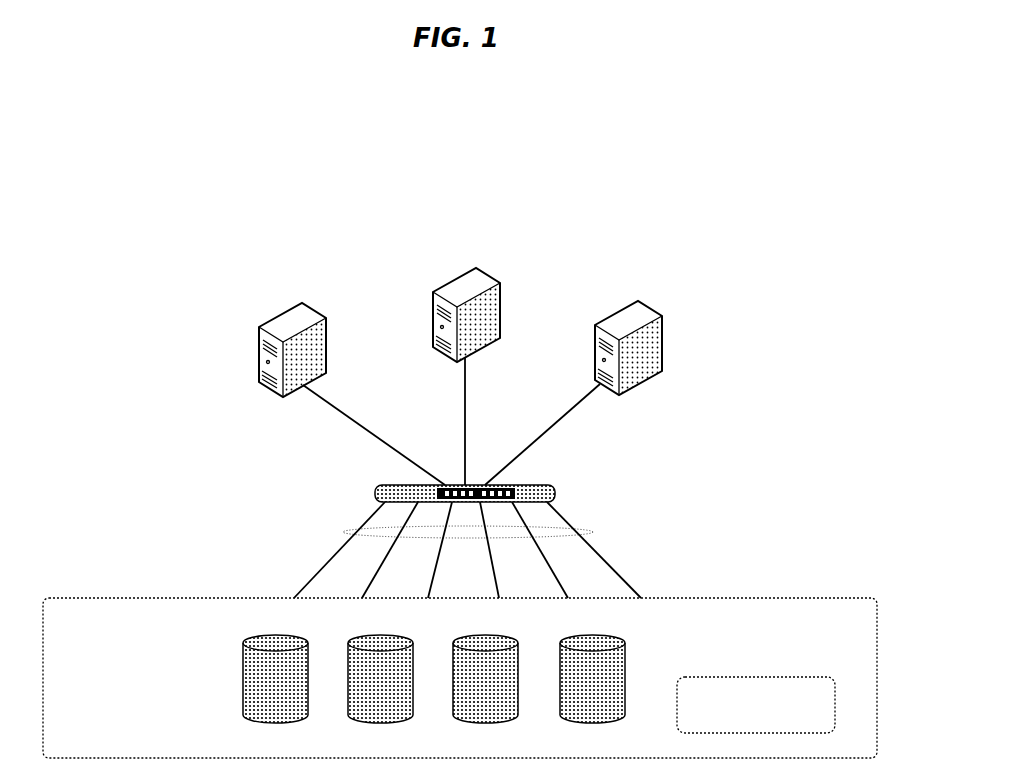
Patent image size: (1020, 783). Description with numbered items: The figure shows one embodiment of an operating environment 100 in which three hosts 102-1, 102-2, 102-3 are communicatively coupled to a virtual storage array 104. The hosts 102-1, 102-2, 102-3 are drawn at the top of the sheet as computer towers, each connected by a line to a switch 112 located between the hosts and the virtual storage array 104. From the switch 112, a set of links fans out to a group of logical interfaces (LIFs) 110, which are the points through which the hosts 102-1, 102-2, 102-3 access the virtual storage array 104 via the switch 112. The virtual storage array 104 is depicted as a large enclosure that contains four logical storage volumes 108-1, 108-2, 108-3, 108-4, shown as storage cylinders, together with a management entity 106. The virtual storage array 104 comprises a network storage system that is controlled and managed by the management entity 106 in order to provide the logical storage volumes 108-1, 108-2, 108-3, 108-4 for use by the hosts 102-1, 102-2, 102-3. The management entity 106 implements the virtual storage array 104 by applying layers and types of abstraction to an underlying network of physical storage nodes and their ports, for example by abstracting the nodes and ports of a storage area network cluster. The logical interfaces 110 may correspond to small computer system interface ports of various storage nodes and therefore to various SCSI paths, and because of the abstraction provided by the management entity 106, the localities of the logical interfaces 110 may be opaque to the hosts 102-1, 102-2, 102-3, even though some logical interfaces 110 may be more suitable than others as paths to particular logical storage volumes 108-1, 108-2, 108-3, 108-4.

The operating environment 100 is at (154, 260).
The host 102-1 is at (292, 302).
The host 102-2 is at (447, 278).
The host 102-3 is at (622, 302).
The virtual storage array 104 is at (134, 660).
The management entity 106 is at (745, 724).
The logical storage volume 108-1 is at (256, 689).
The logical storage volume 108-2 is at (361, 689).
The logical storage volume 108-3 is at (466, 689).
The logical storage volume 108-4 is at (573, 689).
The logical interfaces (LIFs) 110 is at (334, 533).
The switch 112 is at (571, 479).